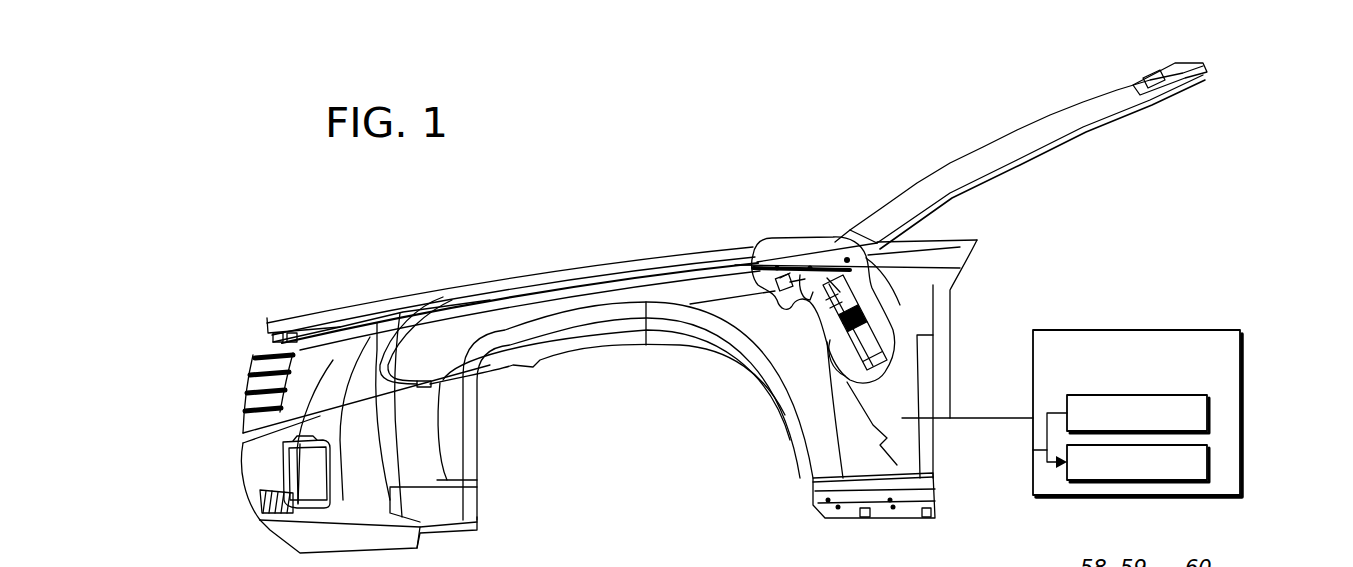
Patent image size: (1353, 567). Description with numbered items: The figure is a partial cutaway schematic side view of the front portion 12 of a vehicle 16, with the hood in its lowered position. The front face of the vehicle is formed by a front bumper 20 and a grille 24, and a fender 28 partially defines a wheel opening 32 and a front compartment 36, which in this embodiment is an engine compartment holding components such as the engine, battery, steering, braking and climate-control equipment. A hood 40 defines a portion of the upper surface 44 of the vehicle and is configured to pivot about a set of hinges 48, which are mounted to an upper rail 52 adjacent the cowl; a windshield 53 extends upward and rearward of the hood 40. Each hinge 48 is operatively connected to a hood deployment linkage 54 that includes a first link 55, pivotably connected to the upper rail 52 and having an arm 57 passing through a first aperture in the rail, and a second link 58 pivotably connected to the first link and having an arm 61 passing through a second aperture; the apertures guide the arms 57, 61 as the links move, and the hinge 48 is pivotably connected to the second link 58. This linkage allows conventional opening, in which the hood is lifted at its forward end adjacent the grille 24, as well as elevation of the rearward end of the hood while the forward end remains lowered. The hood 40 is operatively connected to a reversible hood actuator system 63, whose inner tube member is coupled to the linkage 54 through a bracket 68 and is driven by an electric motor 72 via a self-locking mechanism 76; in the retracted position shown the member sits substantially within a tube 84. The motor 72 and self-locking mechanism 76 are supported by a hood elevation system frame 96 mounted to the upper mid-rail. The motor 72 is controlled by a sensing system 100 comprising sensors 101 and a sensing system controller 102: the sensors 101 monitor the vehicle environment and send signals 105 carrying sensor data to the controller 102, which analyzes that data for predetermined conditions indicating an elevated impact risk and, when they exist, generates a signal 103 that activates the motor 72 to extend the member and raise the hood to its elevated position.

The front portion 12 is at (345, 258).
The vehicle 16 is at (365, 376).
The front bumper 20 is at (260, 467).
The grille 24 is at (257, 365).
The fender 28 is at (566, 342).
The wheel opening 32 is at (810, 302).
The front compartment 36 is at (640, 318).
The hood 40 is at (576, 262).
The upper surface 44 is at (505, 272).
The hinges 48 is at (797, 257).
The upper rail 52 is at (797, 282).
The windshield 53 is at (1006, 138).
The hood deployment linkage 54 is at (810, 268).
The first link 55 is at (780, 285).
The arm 57 is at (736, 334).
The second link 58 is at (833, 332).
The arm 61 is at (789, 390).
The reversible hood actuator system 63 is at (895, 309).
The bracket 68 is at (830, 250).
The electric motor 72 is at (890, 330).
The self-locking mechanism 76 is at (960, 268).
The tube 84 is at (893, 270).
The hood elevation system frame 96 is at (828, 337).
The sensing system 100 is at (1244, 365).
The sensors 101 is at (1207, 411).
The sensing system controller 102 is at (1207, 461).
The signal 103 is at (950, 385).
The signals 105 is at (1040, 452).